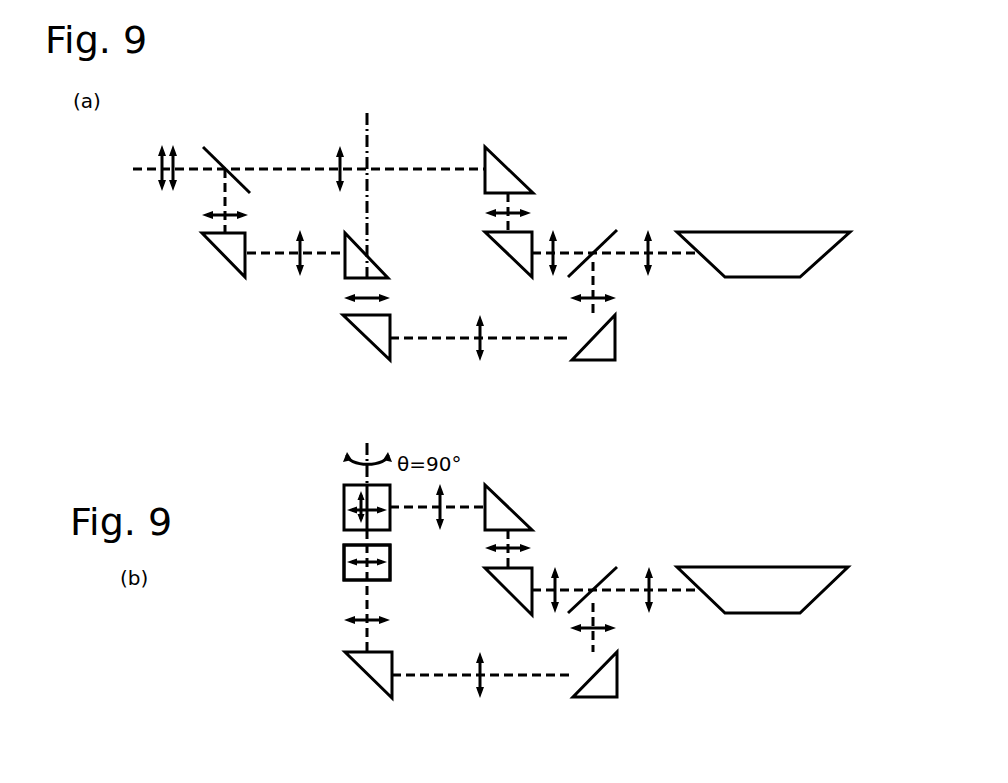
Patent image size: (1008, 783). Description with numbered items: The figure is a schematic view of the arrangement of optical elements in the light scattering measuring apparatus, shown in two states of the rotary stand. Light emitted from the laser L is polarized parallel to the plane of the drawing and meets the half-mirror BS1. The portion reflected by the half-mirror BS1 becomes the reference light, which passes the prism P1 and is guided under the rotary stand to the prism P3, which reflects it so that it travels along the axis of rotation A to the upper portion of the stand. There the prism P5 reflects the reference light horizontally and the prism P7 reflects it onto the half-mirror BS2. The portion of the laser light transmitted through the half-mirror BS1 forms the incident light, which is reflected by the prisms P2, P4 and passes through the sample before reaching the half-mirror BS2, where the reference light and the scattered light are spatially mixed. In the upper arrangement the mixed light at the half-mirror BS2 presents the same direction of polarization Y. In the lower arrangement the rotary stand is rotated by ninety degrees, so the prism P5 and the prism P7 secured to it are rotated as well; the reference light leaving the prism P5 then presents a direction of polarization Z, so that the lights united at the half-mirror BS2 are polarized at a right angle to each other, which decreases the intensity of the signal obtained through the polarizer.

In FIG. 9A, the laser L is at (753, 238).
In FIG. 9B, the laser L is at (768, 573).
In FIG. 9A, the half-mirror BS1 is at (598, 247).
In FIG. 9B, the half-mirror BS1 is at (605, 568).
In FIG. 9A, the half-mirror BS2 is at (220, 160).
In FIG. 9B, the half-mirror BS2 is at (353, 492).
In FIG. 9A, the prism P1 is at (617, 345).
In FIG. 9B, the prism P1 is at (617, 680).
In FIG. 9A, the prism P2 is at (497, 243).
In FIG. 9B, the prism P2 is at (497, 573).
In FIG. 9A, the prism P3 is at (355, 325).
In FIG. 9B, the prism P3 is at (382, 663).
In FIG. 9A, the prism P4 is at (522, 178).
In FIG. 9B, the prism P4 is at (497, 497).
In FIG. 9A, the prism P5 is at (382, 265).
In FIG. 9B, the prism P5 is at (352, 555).
In FIG. 9A, the prism P7 is at (210, 243).
In FIG. 9B, the prism P7 is at (367, 562).
In FIG. 9A, the axis of rotation A is at (368, 181).
In FIG. 9B, the axis of rotation A is at (368, 470).
In FIG. 9A, the direction of polarization Y is at (160, 174).
In FIG. 9B, the direction of polarization Z is at (363, 568).